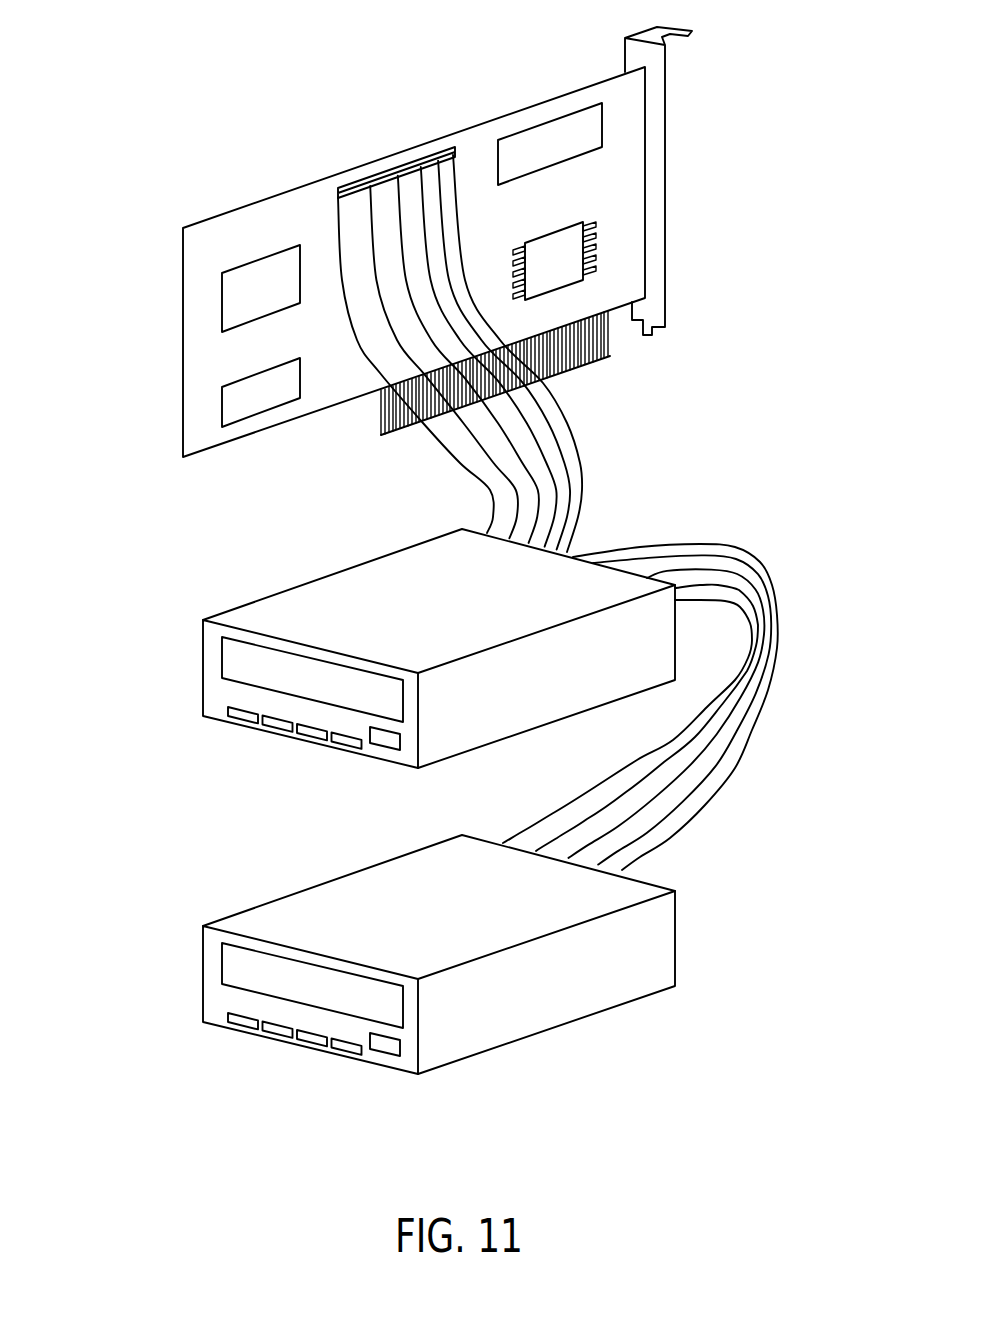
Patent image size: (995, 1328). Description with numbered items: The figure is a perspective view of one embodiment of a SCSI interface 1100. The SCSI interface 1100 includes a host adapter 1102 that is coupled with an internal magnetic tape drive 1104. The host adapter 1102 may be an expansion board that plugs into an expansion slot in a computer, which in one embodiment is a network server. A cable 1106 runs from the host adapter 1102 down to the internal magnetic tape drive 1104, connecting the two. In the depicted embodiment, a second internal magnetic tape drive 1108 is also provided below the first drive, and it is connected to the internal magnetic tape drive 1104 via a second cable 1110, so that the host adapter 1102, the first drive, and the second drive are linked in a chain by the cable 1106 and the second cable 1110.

The SCSI interface 1100 is at (150, 128).
The host adapter 1102 is at (183, 355).
The internal magnetic tape drive 1104 is at (460, 617).
The cable 1106 is at (555, 409).
The second internal magnetic tape drive 1108 is at (456, 923).
The second cable 1110 is at (764, 704).